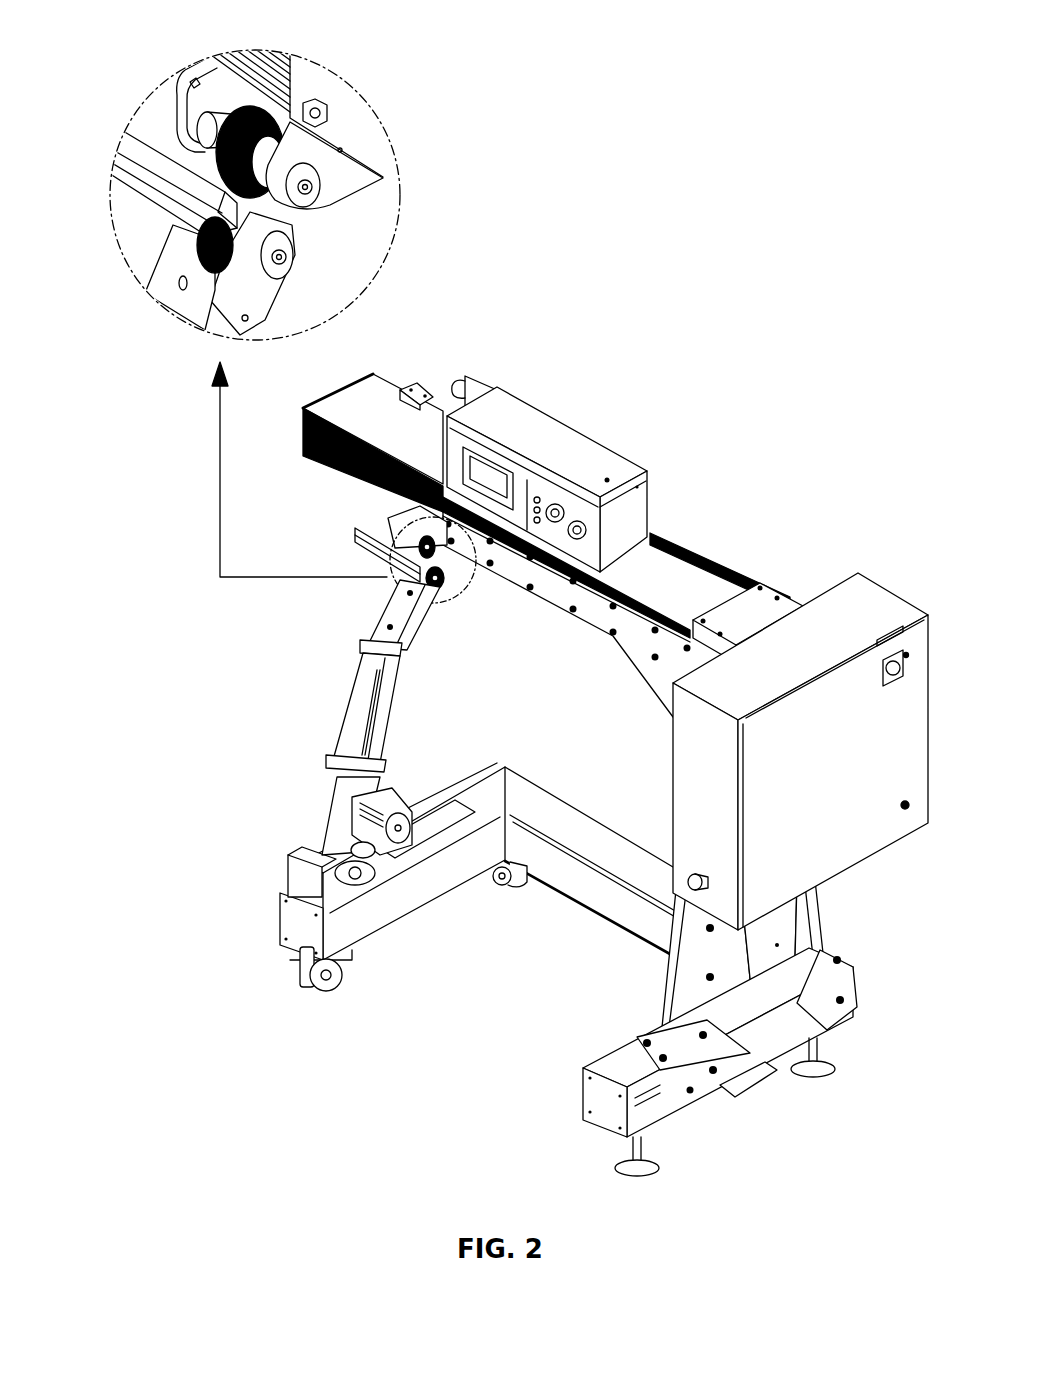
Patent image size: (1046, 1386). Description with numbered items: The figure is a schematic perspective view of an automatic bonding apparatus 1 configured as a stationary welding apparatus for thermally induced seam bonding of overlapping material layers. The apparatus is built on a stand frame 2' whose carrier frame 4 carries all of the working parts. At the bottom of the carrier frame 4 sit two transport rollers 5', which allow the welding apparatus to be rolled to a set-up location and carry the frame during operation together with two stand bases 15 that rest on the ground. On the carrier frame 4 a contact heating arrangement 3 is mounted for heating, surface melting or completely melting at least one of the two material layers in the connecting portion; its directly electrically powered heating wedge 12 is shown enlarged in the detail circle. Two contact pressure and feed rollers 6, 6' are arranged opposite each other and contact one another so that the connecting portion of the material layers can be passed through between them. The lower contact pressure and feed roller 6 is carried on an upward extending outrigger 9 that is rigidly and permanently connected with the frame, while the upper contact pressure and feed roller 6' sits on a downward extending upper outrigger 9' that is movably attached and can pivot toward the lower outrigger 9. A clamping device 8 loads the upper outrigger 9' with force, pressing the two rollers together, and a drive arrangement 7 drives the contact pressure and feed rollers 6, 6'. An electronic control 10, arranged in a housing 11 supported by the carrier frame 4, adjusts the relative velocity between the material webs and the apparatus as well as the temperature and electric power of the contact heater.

The automatic bonding apparatus 1 is at (647, 197).
The stand frame 2' is at (478, 897).
The contact heating arrangement 3 is at (450, 577).
The carrier frame 4 is at (677, 547).
The transport rollers 5' is at (408, 983).
The lower contact pressure and feed roller 6 is at (349, 251).
The upper contact pressure and feed roller 6' is at (382, 179).
The drive arrangement 7 is at (387, 807).
The clamping device 8 is at (450, 390).
The lower outrigger 9 is at (325, 533).
The upper outrigger 9' is at (335, 172).
The electronic control 10 is at (573, 500).
The housing 11 is at (510, 427).
The heating wedge 12 is at (177, 217).
The stand bases 15 is at (640, 1150).